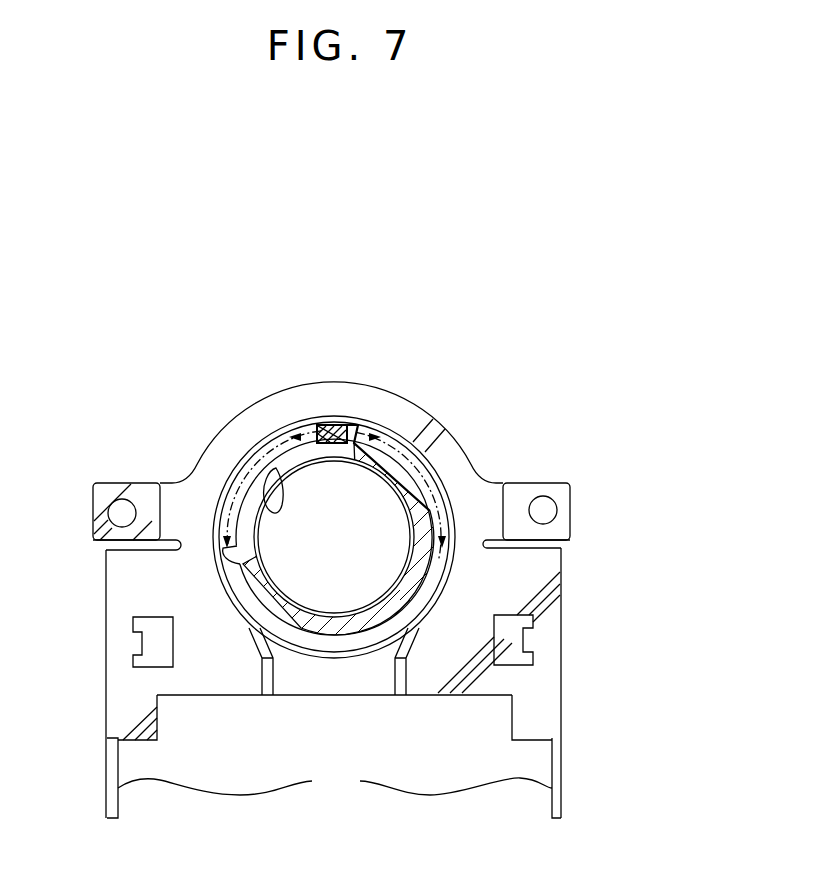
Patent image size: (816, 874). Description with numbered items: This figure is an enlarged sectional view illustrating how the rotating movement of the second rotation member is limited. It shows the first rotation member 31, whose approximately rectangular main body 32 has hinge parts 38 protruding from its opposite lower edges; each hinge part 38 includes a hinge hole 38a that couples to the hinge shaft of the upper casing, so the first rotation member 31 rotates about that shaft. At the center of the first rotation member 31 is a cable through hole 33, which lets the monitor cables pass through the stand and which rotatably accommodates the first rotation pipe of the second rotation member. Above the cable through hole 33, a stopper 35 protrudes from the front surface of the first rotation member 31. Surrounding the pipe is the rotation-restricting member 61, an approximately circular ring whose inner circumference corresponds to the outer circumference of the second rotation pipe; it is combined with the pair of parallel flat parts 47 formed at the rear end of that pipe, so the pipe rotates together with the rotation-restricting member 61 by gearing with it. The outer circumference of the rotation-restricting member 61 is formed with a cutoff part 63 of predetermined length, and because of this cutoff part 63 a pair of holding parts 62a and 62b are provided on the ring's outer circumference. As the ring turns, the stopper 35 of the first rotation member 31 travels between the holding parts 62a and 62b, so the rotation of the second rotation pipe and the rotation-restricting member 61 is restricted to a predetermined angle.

The first rotation member 31 is at (178, 505).
The main body 32 is at (543, 567).
The cable through hole 33 is at (266, 516).
The stopper 35 is at (326, 424).
The hinge part 38 is at (335, 745).
The hinge hole 38a is at (113, 772).
The flat parts 47 is at (410, 467).
The rotation-restricting member 61 is at (248, 596).
The holding part 62a is at (352, 424).
The holding part 62b is at (212, 563).
The cutoff part 63 is at (276, 468).